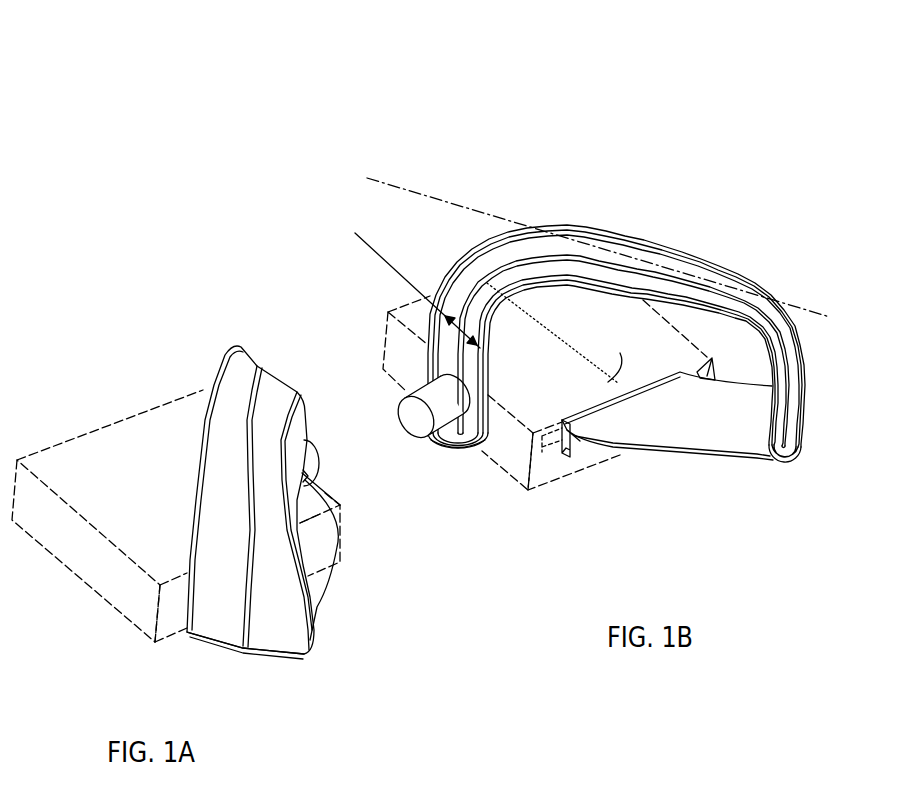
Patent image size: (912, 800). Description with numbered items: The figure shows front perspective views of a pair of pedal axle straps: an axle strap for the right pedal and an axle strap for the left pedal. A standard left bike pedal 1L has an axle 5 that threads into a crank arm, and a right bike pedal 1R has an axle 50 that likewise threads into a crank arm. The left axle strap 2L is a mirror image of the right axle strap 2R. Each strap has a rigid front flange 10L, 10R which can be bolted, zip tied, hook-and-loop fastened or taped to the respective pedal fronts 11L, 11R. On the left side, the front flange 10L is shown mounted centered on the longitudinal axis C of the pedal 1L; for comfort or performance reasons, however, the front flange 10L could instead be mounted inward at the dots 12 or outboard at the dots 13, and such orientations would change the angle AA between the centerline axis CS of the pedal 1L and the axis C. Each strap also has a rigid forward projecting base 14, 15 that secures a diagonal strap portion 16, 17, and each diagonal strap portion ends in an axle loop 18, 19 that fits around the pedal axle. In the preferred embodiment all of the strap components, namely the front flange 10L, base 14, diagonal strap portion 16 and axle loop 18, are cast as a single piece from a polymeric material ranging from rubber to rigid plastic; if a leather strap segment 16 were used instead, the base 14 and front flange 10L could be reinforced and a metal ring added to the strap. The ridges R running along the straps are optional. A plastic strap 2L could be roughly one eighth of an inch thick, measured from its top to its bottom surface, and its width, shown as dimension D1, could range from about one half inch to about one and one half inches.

In FIG. 1A, the right bike pedal 1R is at (138, 489).
In FIG. 1A, the right axle strap 2R is at (220, 363).
In FIG. 1A, the diagonal strap portion 17 is at (270, 393).
In FIG. 1A, the axle 50 is at (313, 460).
In FIG. 1A, the axle loop 19 is at (313, 475).
In FIG. 1A, the forward projecting base 15 is at (310, 559).
In FIG. 1A, the front flange 10R is at (335, 527).
In FIG. 1A, the pedal front 11R is at (172, 608).
In FIG. 1A, the ridges R is at (190, 623).
In FIG. 1B, the left bike pedal 1L is at (548, 411).
In FIG. 1B, the left axle strap 2L is at (627, 233).
In FIG. 1B, the diagonal strap portion 16 is at (693, 270).
In FIG. 1B, the centerline axis of the pedal CS is at (588, 240).
In FIG. 1B, the width dimension D1 is at (417, 289).
In FIG. 1B, the angle of orientation AA is at (552, 333).
In FIG. 1B, the longitudinal axis of the pedal C is at (603, 378).
In FIG. 1B, the axle 5 is at (413, 420).
In FIG. 1B, the axle loop 18 is at (458, 441).
In FIG. 1B, the forward projecting base 14 is at (700, 420).
In FIG. 1B, the dots 13 is at (710, 360).
In FIG. 1B, the dots 12 is at (560, 452).
In FIG. 1B, the pedal front 11L is at (550, 467).
In FIG. 1B, the front flange 10L is at (577, 445).